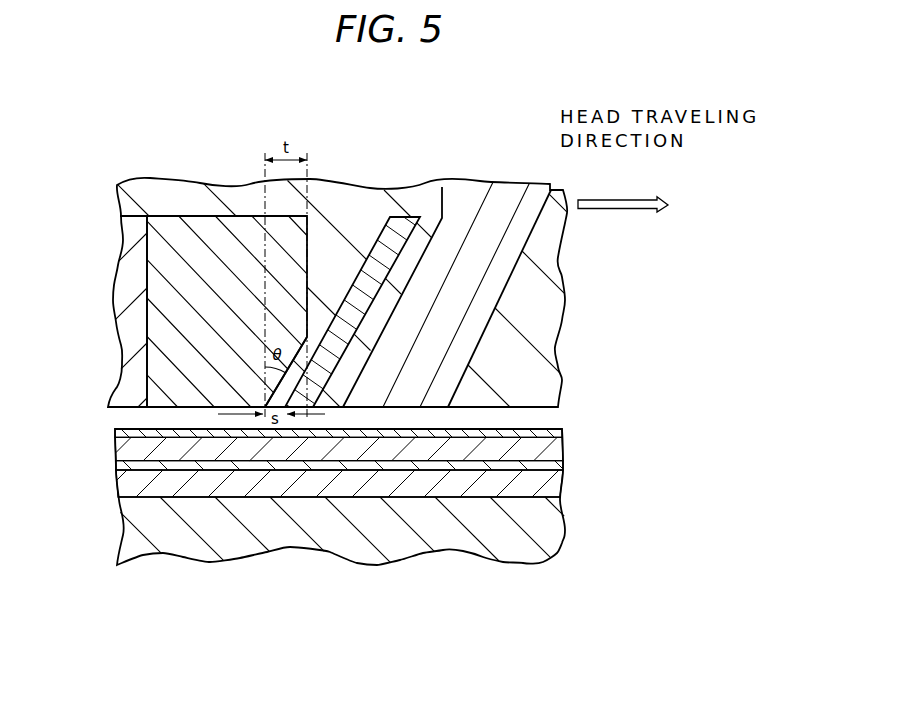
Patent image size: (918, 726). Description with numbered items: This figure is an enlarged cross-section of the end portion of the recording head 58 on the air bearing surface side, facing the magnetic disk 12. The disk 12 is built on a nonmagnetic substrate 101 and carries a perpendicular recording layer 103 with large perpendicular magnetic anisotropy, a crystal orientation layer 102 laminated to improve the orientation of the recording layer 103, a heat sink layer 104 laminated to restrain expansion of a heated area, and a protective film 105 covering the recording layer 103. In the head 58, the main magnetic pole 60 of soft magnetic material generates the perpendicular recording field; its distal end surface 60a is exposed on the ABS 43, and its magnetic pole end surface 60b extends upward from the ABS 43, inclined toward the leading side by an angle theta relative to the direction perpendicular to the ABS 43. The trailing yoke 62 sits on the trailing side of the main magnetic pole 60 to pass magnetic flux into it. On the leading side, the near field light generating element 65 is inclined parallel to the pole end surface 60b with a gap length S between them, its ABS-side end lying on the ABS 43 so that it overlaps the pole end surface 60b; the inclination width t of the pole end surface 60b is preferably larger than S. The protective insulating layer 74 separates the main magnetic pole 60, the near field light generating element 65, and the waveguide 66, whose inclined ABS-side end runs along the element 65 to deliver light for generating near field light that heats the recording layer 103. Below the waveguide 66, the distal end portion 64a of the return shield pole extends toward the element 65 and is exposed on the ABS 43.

The recording head 58 is at (228, 155).
The main magnetic pole 60 is at (163, 228).
The distal end surface 60a is at (167, 408).
The magnetic pole end surface 60b is at (299, 381).
The trailing yoke 62 is at (118, 290).
The distal end portion 64a is at (556, 351).
The near field light generating element 65 is at (403, 222).
The waveguide 66 is at (503, 195).
The protective insulating layer 74 is at (350, 200).
The air bearing surface (ABS) 43 is at (533, 412).
The magnetic disk 12 is at (177, 568).
The substrate 101 is at (549, 522).
The crystal orientation layer 102 is at (556, 466).
The perpendicular recording layer 103 is at (555, 446).
The heat sink layer 104 is at (556, 485).
The protective film 105 is at (560, 432).